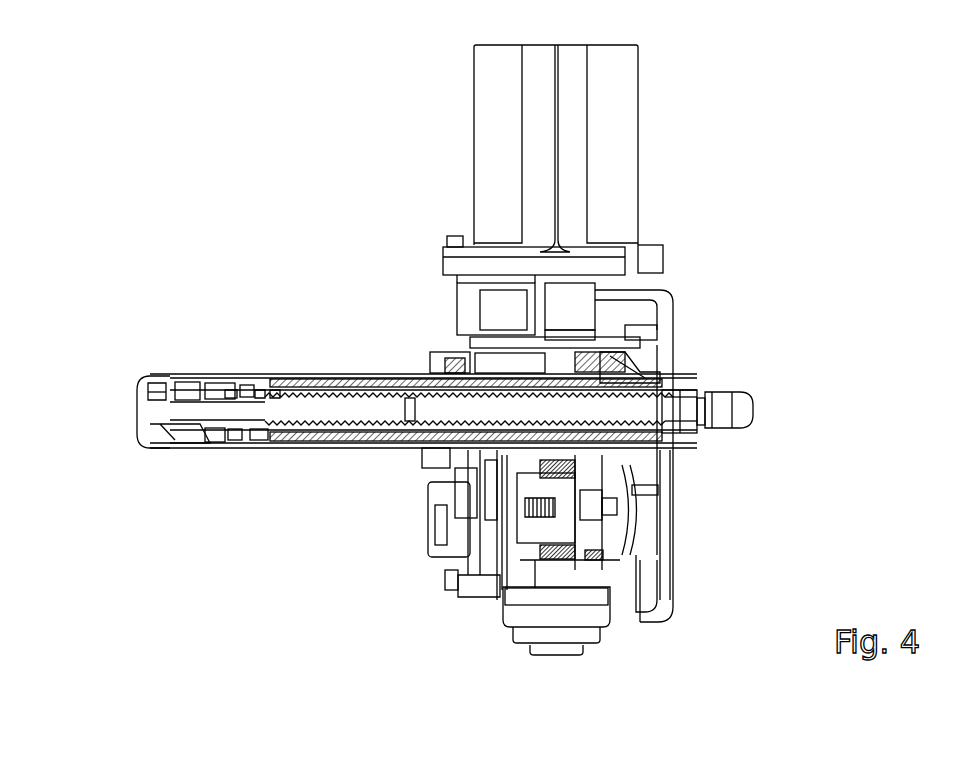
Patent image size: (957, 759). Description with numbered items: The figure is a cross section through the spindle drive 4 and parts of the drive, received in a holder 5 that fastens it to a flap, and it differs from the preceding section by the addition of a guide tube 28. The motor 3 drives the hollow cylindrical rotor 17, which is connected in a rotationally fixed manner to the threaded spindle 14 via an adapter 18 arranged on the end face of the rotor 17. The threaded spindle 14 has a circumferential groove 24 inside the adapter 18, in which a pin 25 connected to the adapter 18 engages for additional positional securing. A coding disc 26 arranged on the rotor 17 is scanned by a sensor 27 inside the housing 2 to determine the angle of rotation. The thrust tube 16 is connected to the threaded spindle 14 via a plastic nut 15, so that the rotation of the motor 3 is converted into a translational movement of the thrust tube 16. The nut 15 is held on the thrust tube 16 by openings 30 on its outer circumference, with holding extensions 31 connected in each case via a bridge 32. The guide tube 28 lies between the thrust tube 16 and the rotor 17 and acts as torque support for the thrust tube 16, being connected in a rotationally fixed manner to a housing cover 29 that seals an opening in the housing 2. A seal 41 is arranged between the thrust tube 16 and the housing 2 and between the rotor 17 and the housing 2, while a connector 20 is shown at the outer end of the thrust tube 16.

The housing 2 is at (425, 551).
The motor 3 is at (500, 118).
The spindle drive 4 is at (375, 412).
The holder 5 is at (665, 582).
The threaded spindle 14 is at (395, 418).
The nut 15 is at (215, 385).
The thrust tube 16 is at (302, 392).
The rotor 17 is at (287, 448).
The adapter 18 is at (140, 378).
The connector 20 is at (740, 412).
The circumferential groove 24 is at (162, 392).
The pin 25 is at (160, 425).
The coding disc 26 is at (433, 365).
The sensor 27 is at (467, 480).
The guide tube 28 is at (338, 430).
The housing cover 29 is at (633, 373).
The openings 30 is at (232, 383).
The holding extensions 31 is at (222, 440).
The bridge 32 is at (220, 443).
The seal 41 is at (478, 360).